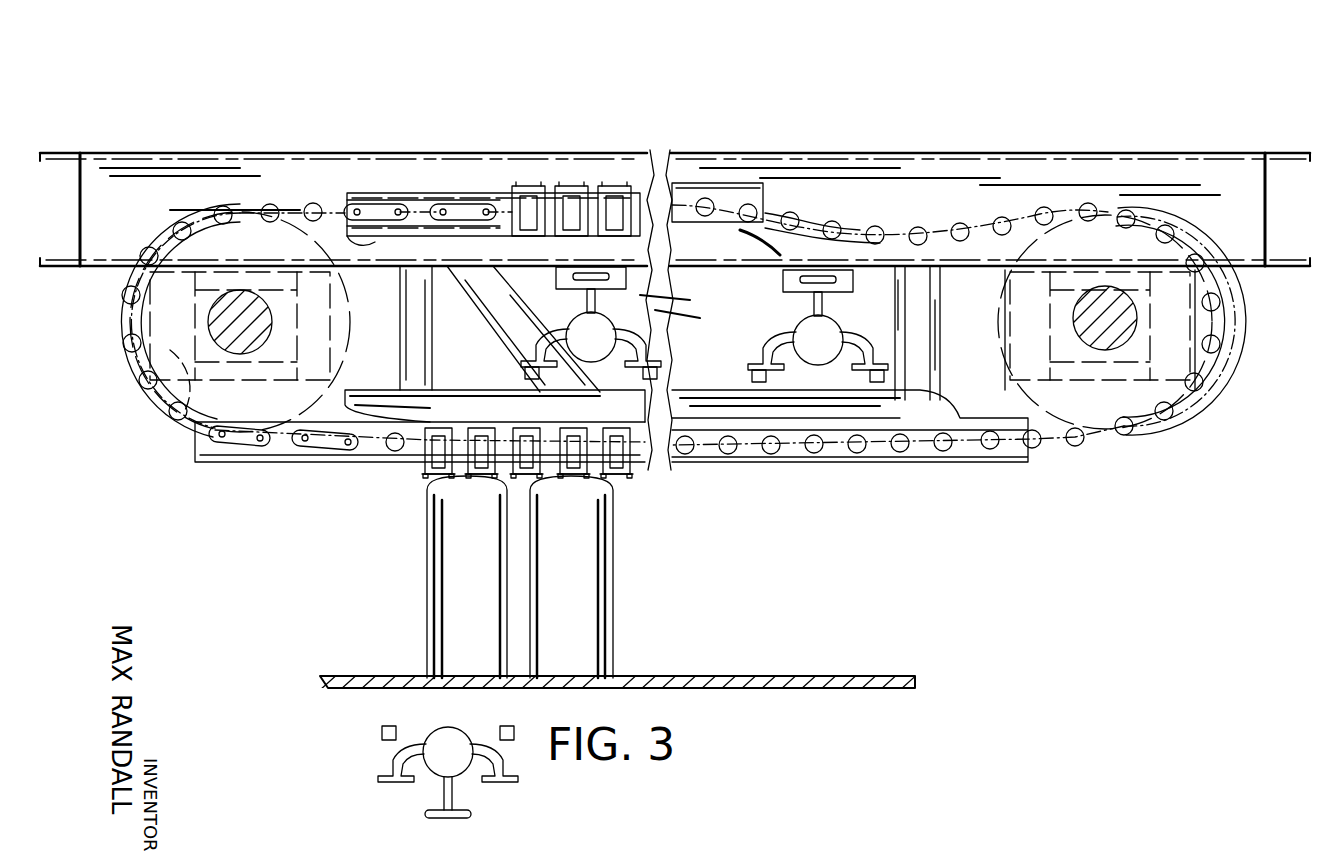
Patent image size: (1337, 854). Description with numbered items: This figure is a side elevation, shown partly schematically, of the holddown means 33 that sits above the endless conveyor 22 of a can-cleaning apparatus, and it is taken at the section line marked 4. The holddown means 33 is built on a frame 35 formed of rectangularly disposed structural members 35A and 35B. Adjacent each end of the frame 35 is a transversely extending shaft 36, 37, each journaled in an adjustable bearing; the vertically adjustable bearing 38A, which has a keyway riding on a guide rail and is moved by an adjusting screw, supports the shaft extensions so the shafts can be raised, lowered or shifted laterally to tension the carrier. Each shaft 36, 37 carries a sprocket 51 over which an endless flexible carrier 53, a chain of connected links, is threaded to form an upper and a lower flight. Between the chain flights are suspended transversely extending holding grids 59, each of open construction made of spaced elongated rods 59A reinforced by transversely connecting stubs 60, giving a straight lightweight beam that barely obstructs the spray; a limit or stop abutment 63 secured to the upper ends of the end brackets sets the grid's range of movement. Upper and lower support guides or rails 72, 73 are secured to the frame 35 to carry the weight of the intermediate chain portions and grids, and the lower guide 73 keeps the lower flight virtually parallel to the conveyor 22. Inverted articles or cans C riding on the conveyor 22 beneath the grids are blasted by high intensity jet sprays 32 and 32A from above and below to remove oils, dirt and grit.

The section line 4- 4 is at (57, 125).
The endless conveyor 22 is at (646, 676).
The high intensity jet spray 32 is at (593, 330).
The high intensity jet spray 32A is at (390, 755).
The holddown means 33 is at (843, 90).
The frame 35 is at (1113, 105).
The structural member 35A is at (135, 153).
The structural member 35B is at (80, 188).
The shaft 36 is at (1125, 348).
The shaft 37 is at (215, 348).
The vertically adjustable bearing 38A is at (185, 421).
The sprocket 51 is at (240, 236).
The endless flexible carrier 53 is at (842, 216).
The holding grid 59 is at (420, 482).
The elongated rod 59A is at (630, 483).
The connecting stub 60 is at (614, 478).
The limit or stop abutment 63 is at (438, 430).
The upper support guide or rail 72 is at (395, 226).
The lower support guide or rail 73 is at (930, 462).
The article or can C is at (615, 543).